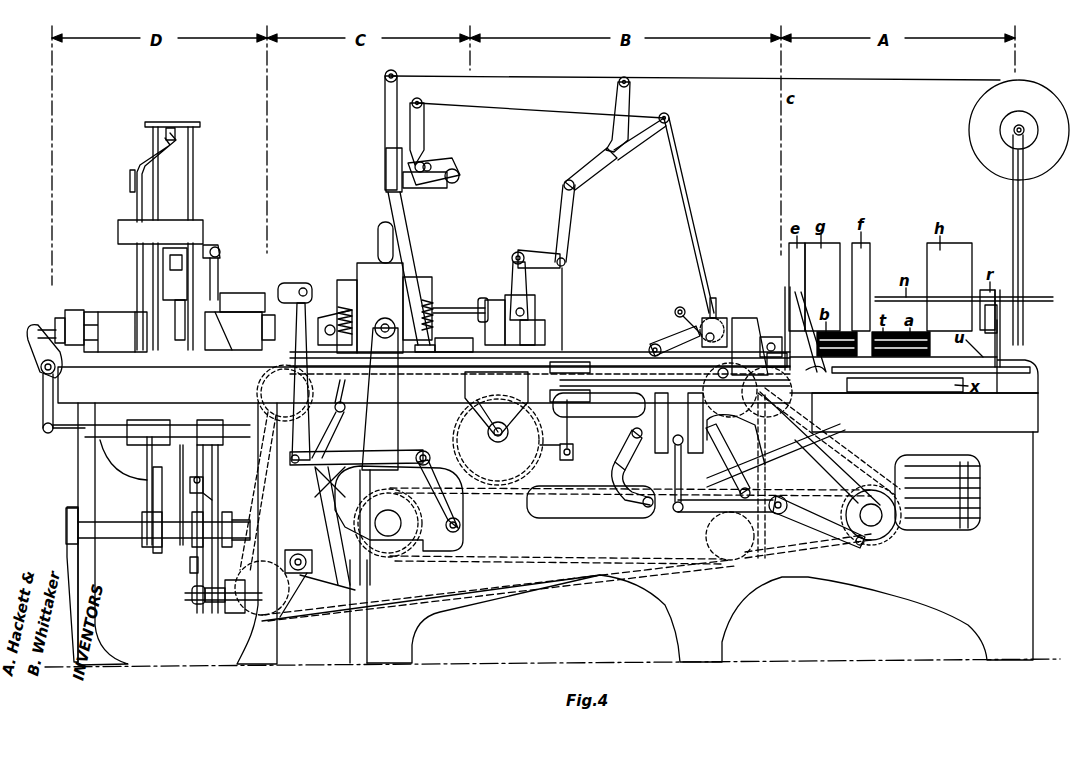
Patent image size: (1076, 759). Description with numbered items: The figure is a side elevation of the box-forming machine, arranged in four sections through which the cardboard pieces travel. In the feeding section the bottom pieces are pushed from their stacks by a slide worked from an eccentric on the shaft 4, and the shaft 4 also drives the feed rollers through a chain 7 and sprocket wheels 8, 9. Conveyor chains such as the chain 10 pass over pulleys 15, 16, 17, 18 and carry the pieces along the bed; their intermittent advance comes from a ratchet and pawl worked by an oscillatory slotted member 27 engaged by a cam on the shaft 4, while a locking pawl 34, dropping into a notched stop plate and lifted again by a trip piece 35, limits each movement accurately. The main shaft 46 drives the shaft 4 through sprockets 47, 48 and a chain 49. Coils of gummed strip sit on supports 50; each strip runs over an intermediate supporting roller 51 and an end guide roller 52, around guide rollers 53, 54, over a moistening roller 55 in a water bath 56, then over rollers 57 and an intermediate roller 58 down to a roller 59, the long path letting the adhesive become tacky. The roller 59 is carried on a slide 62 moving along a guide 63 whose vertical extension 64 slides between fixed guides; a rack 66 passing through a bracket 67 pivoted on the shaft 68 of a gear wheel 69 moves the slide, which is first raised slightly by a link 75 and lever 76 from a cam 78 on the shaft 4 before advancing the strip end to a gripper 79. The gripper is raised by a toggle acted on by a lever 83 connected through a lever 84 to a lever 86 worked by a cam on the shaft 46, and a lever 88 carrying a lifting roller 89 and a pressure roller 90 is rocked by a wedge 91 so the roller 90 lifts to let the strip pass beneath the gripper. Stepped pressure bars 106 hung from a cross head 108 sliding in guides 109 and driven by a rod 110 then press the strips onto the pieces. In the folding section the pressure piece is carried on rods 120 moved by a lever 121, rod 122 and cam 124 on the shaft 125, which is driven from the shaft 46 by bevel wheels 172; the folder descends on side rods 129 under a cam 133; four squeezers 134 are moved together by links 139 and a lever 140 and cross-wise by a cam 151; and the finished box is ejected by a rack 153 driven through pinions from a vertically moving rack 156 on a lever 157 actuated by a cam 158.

The shaft 4 is at (868, 510).
The chain 7 is at (822, 410).
The sprocket wheel 8 is at (790, 388).
The sprocket wheel 9 is at (892, 492).
The conveyor chain 10 is at (690, 577).
The pulley 15 is at (706, 537).
The pulley 16 is at (732, 416).
The pulley 17 is at (257, 388).
The pulley 18 is at (292, 596).
The oscillatory slotted member 27 is at (945, 504).
The locking pawl 34 is at (620, 468).
The trip piece 35 is at (628, 494).
The main shaft 46 is at (387, 515).
The sprocket 47 is at (392, 556).
The sprocket 48 is at (872, 480).
The chain 49 is at (591, 502).
The support 50 is at (1013, 212).
The intermediate supporting roller 51 is at (630, 84).
The end guide roller 52 is at (386, 78).
The guide roller 53 is at (388, 194).
The guide roller 54 is at (455, 182).
The moistening roller 55 is at (438, 160).
The water bath 56 is at (425, 192).
The roller 57 is at (420, 107).
The intermediate roller 58 is at (669, 118).
The roller 59 is at (675, 336).
The slide 62 is at (742, 335).
The guide 63 is at (628, 368).
The vertical extension 64 is at (722, 458).
The rack 66 is at (590, 385).
The bracket 67 is at (477, 400).
The shaft 68 is at (496, 436).
The gear wheel 69 is at (497, 486).
The link 75 is at (672, 492).
The lever 76 is at (790, 520).
The cam 78 is at (868, 530).
The gripper 79 is at (493, 350).
The lever 83 is at (510, 290).
The lever 84 is at (540, 255).
The lever 86 is at (560, 457).
The lever 88 is at (698, 332).
The lifting roller 89 is at (676, 310).
The pressure roller 90 is at (647, 339).
The wedge 91 is at (540, 335).
The bars 106 is at (450, 354).
The cross head 108 is at (348, 282).
The guides 109 is at (357, 316).
The rod 110 is at (372, 392).
The rods 120 is at (200, 193).
The lever 121 is at (158, 152).
The rod 122 is at (136, 252).
The cam 124 is at (152, 497).
The shaft 125 is at (114, 535).
The side rods 129 is at (219, 282).
The cam 133 is at (219, 490).
The squeezers 134 is at (104, 300).
The links 139 is at (48, 330).
The lever 140 is at (60, 398).
The cam 151 is at (186, 562).
The rack 153 is at (459, 307).
The vertically moving rack 156 is at (310, 384).
The lever 157 is at (316, 468).
The cam 158 is at (433, 527).
The bevel wheels 172 is at (352, 484).